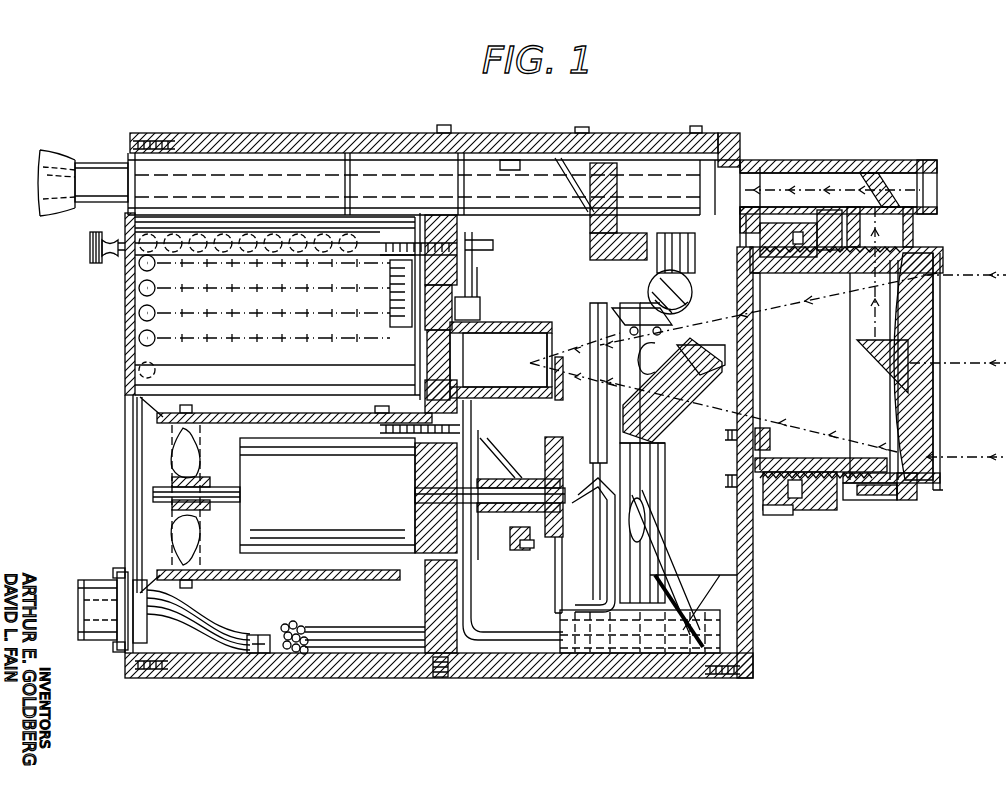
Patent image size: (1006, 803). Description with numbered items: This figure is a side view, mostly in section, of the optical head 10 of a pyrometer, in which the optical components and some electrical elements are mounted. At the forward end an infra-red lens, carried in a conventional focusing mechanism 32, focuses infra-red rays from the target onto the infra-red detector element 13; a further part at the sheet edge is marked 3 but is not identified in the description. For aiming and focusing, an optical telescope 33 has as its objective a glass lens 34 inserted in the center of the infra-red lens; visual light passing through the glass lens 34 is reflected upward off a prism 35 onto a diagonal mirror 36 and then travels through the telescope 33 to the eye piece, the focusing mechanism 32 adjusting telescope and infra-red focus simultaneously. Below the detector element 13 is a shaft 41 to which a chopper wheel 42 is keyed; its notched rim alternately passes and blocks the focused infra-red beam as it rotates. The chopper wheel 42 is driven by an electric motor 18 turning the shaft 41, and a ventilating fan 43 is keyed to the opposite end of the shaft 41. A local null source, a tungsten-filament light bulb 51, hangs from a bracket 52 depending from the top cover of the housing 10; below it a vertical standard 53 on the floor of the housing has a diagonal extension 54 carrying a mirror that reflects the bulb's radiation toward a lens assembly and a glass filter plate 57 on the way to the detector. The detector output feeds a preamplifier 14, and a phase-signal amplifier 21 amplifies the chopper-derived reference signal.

The lens housing 3 is at (933, 410).
The optical head 10 is at (641, 678).
The infra-red detector element 13 is at (522, 348).
The preamplifier 14 is at (257, 306).
The phase-signal amplifier 21 is at (162, 300).
The electric motor 18 is at (334, 505).
The focusing mechanism 32 is at (820, 498).
The optical telescope 33 is at (205, 178).
The glass lens 34 is at (933, 352).
The prism 35 is at (873, 353).
The diagonal mirror 36 is at (903, 190).
The shaft 41 is at (489, 494).
The chopper wheel 42 is at (552, 592).
The ventilating fan 43 is at (183, 545).
The tungsten-filament light bulb 51 is at (665, 312).
The bracket 52 is at (597, 247).
The vertical standard 53 is at (663, 497).
The diagonal extension 54 is at (680, 412).
The glass filter plate 57 is at (53, 167).